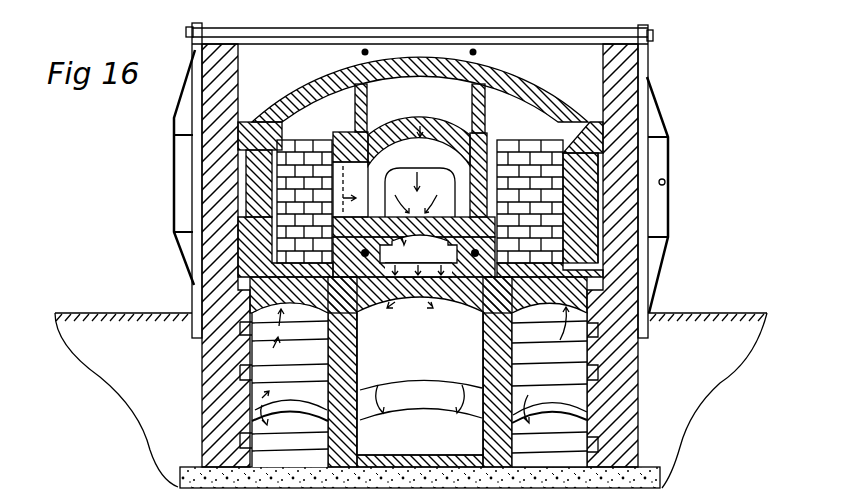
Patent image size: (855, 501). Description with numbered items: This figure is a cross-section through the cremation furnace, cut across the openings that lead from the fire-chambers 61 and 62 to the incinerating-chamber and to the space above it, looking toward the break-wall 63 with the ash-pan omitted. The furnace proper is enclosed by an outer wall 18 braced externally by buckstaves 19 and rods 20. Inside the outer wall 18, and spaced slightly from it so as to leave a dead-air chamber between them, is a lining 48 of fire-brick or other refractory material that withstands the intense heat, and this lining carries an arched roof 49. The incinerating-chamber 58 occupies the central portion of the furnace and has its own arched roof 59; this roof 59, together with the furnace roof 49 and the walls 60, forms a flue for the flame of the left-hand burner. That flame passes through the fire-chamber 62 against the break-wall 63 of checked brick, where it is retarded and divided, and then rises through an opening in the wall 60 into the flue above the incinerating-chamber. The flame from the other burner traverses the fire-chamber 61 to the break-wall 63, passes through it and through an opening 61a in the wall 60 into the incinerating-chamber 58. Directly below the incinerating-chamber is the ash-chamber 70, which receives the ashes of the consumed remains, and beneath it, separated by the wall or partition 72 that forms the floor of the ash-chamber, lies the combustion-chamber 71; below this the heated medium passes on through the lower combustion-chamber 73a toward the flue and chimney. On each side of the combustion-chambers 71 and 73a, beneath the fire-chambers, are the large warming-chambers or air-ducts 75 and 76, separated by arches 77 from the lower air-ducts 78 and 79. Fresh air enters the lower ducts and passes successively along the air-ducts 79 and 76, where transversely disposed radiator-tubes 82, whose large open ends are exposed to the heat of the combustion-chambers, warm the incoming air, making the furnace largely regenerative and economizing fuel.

The outer wall 18 is at (660, 438).
The buckstaves 19 is at (680, 221).
The rods 20 is at (419, 177).
The lining 48 is at (253, 190).
The arched roof 49 is at (520, 93).
The incinerating-chamber 58 is at (420, 185).
The arched roof 59 is at (470, 114).
The walls 60 is at (366, 110).
The fire-chamber 61 is at (347, 108).
The opening 61a is at (362, 180).
The fire-chamber 62 is at (489, 108).
The break-wall 63 is at (262, 216).
The ash-chamber 70 is at (414, 256).
The combustion-chamber 71 is at (420, 389).
The wall or partition 72 is at (425, 293).
The lower combustion-chamber 73a is at (421, 407).
The warming-chamber or air-duct 75 is at (554, 334).
The warming-chamber or air-duct 76 is at (285, 333).
The arches 77 is at (566, 416).
The lower air-duct 78 is at (549, 462).
The lower air-duct 79 is at (273, 411).
The radiator-tubes 82 is at (419, 387).